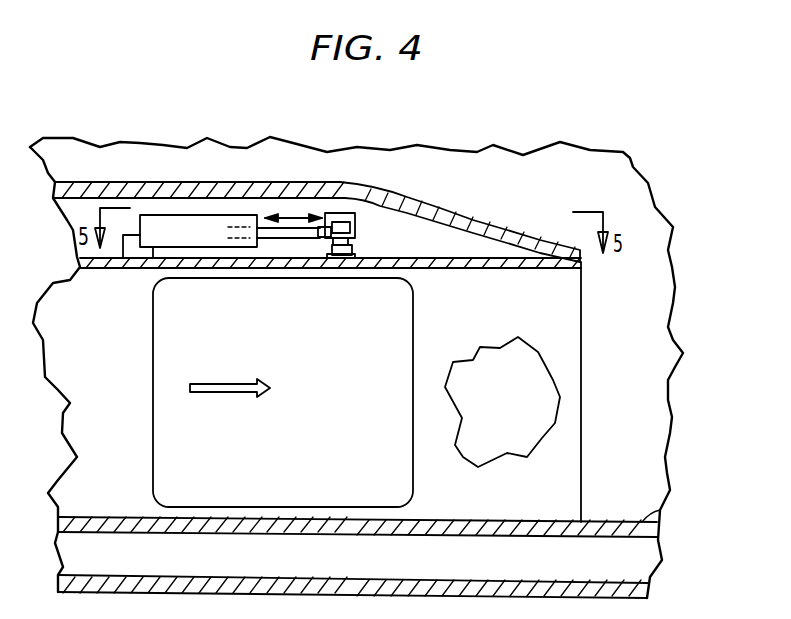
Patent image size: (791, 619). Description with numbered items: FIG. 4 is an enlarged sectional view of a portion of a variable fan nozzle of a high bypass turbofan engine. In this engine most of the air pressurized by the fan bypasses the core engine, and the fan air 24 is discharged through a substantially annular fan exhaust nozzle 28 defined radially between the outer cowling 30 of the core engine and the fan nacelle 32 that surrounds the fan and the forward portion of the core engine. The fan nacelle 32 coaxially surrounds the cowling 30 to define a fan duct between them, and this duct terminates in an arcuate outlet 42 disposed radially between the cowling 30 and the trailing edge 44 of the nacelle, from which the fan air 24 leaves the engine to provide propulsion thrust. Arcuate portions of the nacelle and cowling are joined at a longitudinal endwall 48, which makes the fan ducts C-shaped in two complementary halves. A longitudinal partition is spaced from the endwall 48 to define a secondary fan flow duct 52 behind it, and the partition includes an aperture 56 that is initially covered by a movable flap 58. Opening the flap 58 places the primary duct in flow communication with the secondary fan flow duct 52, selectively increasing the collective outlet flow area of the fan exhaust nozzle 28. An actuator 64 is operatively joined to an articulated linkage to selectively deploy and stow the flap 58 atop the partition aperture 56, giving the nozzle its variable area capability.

The fan air 24 is at (210, 383).
The fan exhaust nozzle 28 is at (445, 183).
The cowling 30 is at (660, 512).
The fan nacelle 32 is at (265, 182).
The outlet 42 is at (582, 450).
The trailing edge 44 is at (586, 270).
The endwall 48 is at (513, 413).
The secondary fan flow duct 52 is at (482, 445).
The aperture 56 is at (153, 432).
The flap 58 is at (326, 406).
The actuator 64 is at (187, 215).